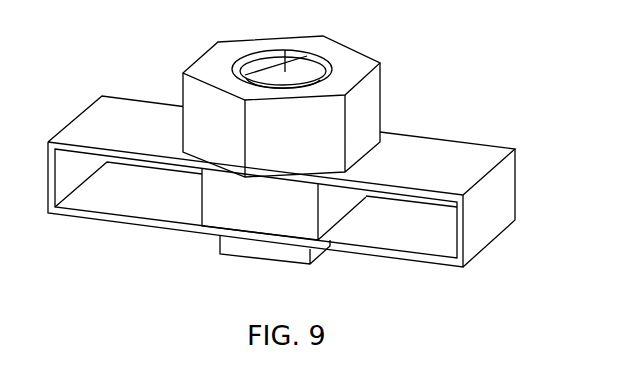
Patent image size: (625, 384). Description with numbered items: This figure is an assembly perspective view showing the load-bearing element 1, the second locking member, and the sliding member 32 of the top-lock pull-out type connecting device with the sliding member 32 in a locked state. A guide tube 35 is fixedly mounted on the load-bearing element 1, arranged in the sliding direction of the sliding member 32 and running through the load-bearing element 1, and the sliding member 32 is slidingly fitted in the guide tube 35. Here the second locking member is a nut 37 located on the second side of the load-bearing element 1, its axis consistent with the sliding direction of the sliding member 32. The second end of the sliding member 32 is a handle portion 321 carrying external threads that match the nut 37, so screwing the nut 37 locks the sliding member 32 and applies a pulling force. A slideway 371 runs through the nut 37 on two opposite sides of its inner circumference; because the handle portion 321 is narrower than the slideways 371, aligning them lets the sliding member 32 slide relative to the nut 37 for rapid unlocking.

The load-bearing element 1 is at (440, 158).
The nut 37 is at (347, 58).
The handle portion 321 is at (238, 62).
The slideway 371 is at (306, 60).
The guide tube 35 is at (220, 202).
The sliding member 32 is at (282, 248).